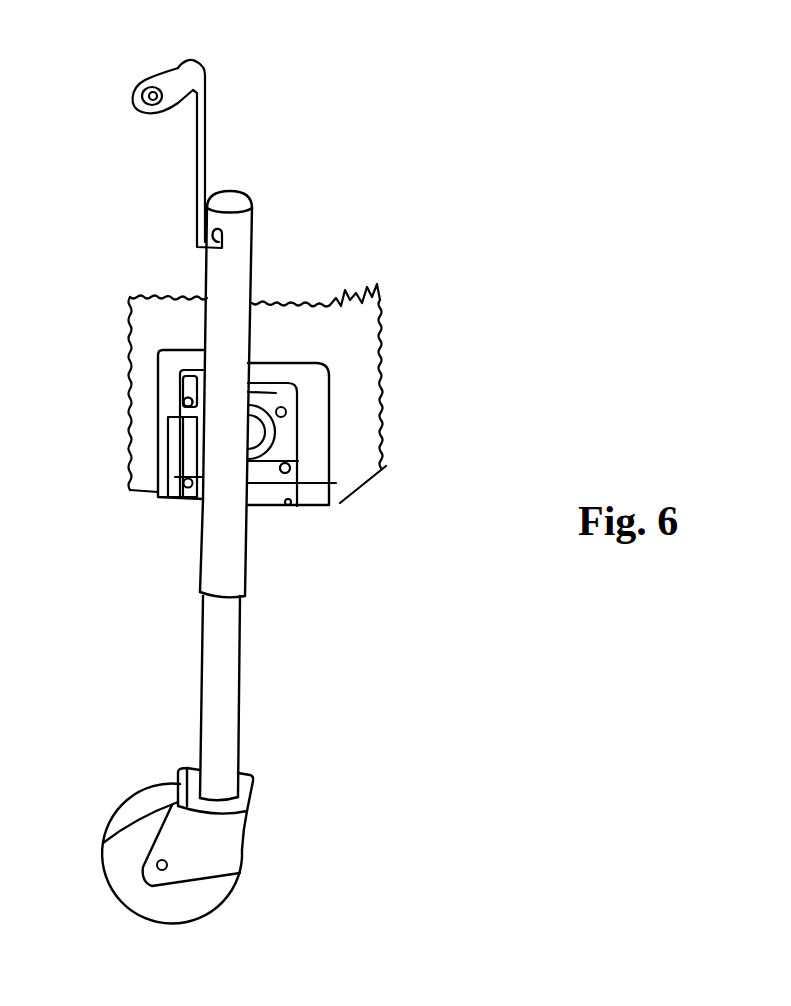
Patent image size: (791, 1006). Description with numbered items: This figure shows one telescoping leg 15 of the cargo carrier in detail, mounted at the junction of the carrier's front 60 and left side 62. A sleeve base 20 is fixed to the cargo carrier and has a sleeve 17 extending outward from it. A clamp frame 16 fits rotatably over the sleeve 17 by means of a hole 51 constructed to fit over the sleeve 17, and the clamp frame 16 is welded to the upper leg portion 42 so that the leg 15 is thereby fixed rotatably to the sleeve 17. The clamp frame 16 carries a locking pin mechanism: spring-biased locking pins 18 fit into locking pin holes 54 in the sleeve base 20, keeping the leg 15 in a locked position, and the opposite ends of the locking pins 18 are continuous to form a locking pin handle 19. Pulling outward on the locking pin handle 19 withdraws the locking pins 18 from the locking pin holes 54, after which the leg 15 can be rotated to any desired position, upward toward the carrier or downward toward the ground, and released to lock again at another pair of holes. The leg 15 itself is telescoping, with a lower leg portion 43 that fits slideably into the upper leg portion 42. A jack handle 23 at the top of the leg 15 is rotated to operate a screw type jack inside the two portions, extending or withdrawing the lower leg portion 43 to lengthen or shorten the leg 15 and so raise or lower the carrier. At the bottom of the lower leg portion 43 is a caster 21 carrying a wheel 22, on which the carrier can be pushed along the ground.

The telescoping leg 15 is at (355, 188).
The clamp frame 16 is at (298, 388).
The sleeve 17 is at (250, 441).
The locking pins 18 is at (183, 403).
The locking pin handle 19 is at (168, 450).
The sleeve base 20 is at (320, 362).
The caster 21 is at (254, 775).
The wheel 22 is at (237, 887).
The jack handle 23 is at (208, 93).
The upper leg portion 42 is at (247, 543).
The lower leg portion 43 is at (240, 670).
The hole 51 is at (290, 469).
The locking pin holes 54 is at (286, 412).
The front 60 is at (387, 332).
The left side 62 is at (293, 307).